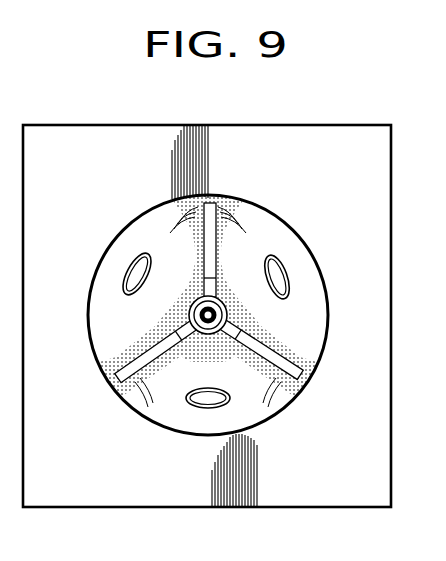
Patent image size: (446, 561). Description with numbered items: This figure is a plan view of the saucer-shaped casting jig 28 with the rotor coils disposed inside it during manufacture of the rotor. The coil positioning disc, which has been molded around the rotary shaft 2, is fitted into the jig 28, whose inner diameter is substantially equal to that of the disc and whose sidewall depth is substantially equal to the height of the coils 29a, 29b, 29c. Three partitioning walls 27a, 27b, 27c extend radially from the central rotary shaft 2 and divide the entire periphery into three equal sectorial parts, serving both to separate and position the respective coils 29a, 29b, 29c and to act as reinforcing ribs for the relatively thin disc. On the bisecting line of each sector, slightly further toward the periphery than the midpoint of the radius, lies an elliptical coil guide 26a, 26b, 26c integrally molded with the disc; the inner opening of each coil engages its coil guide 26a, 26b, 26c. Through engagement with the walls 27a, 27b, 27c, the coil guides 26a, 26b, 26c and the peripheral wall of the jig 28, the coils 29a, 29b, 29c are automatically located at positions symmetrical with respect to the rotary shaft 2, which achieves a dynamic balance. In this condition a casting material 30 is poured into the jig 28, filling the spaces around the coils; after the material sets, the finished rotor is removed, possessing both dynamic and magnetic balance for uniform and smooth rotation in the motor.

The rotary shaft 2 is at (229, 316).
The coil guide 26a is at (290, 287).
The coil guide 26b is at (196, 408).
The coil guide 26c is at (142, 260).
The partitioning wall 27a is at (303, 374).
The partitioning wall 27b is at (115, 383).
The partitioning wall 27c is at (218, 206).
The casting jig 28 is at (380, 193).
The coil 29a is at (282, 228).
The coil 29b is at (290, 404).
The coil 29c is at (98, 290).
The casting material 30 is at (107, 362).